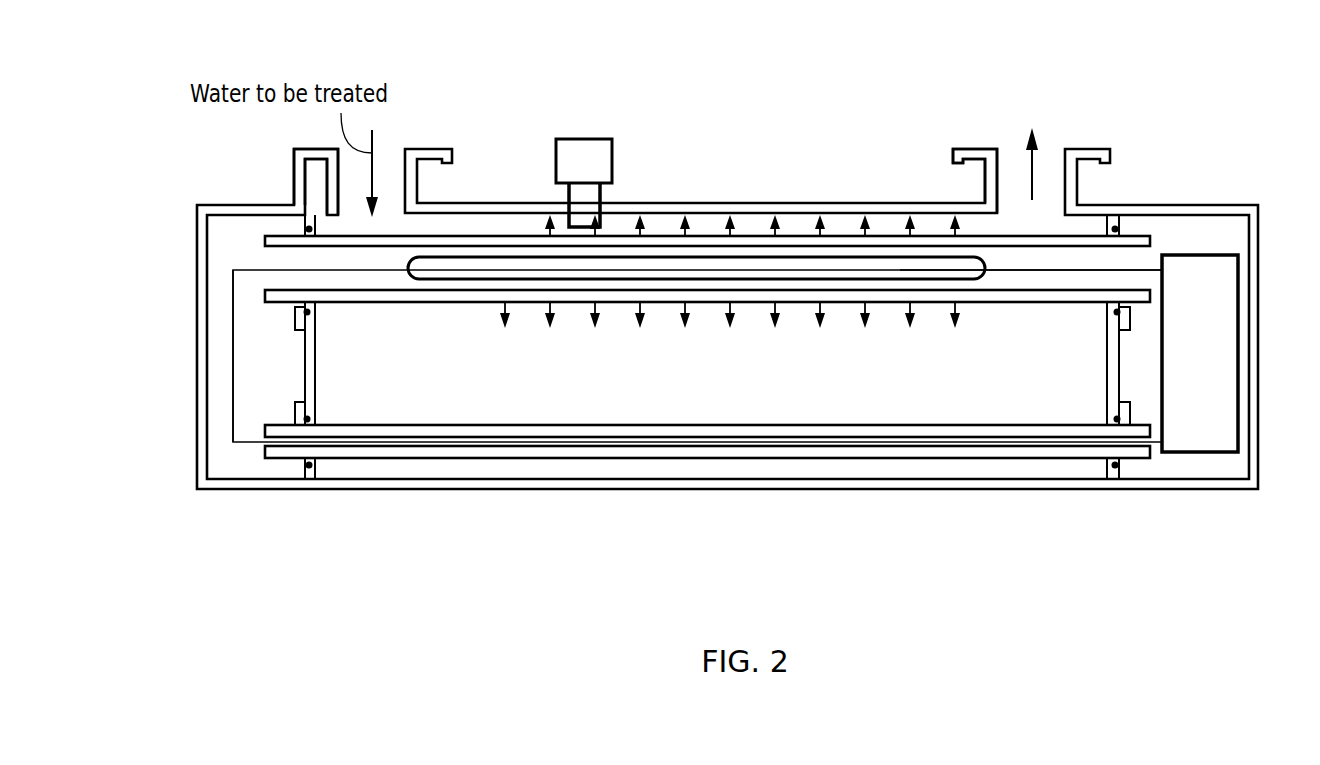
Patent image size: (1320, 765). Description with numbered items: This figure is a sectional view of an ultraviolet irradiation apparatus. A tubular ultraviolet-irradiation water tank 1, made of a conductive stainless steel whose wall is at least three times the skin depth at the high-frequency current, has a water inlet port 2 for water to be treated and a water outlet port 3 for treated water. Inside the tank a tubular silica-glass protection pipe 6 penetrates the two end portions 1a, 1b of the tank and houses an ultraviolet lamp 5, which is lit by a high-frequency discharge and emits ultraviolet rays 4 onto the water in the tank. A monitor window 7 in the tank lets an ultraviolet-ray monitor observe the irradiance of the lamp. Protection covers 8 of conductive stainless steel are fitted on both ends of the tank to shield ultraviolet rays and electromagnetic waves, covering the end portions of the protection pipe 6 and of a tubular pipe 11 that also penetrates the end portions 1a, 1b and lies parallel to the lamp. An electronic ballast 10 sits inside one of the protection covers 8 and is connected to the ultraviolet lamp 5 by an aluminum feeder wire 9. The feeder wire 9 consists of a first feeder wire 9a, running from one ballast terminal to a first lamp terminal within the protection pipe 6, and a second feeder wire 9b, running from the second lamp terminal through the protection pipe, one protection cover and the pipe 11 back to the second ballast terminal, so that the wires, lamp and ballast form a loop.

The ultraviolet-irradiation water tank 1 is at (508, 203).
The end portion 1a is at (1105, 379).
The end portion 1b is at (318, 371).
The water inlet port 2 is at (432, 151).
The water outlet port 3 is at (975, 149).
The ultraviolet rays 4 is at (866, 229).
The ultraviolet lamp 5 is at (749, 260).
The protection pipe 6 is at (798, 238).
The monitor window 7 is at (612, 160).
The protection cover 8 is at (221, 205).
The feeder wire 9 is at (216, 353).
The first feeder wire 9a is at (1039, 271).
The second feeder wire 9b is at (232, 284).
The electronic ballast 10 is at (1197, 453).
The pipe 11 is at (550, 458).